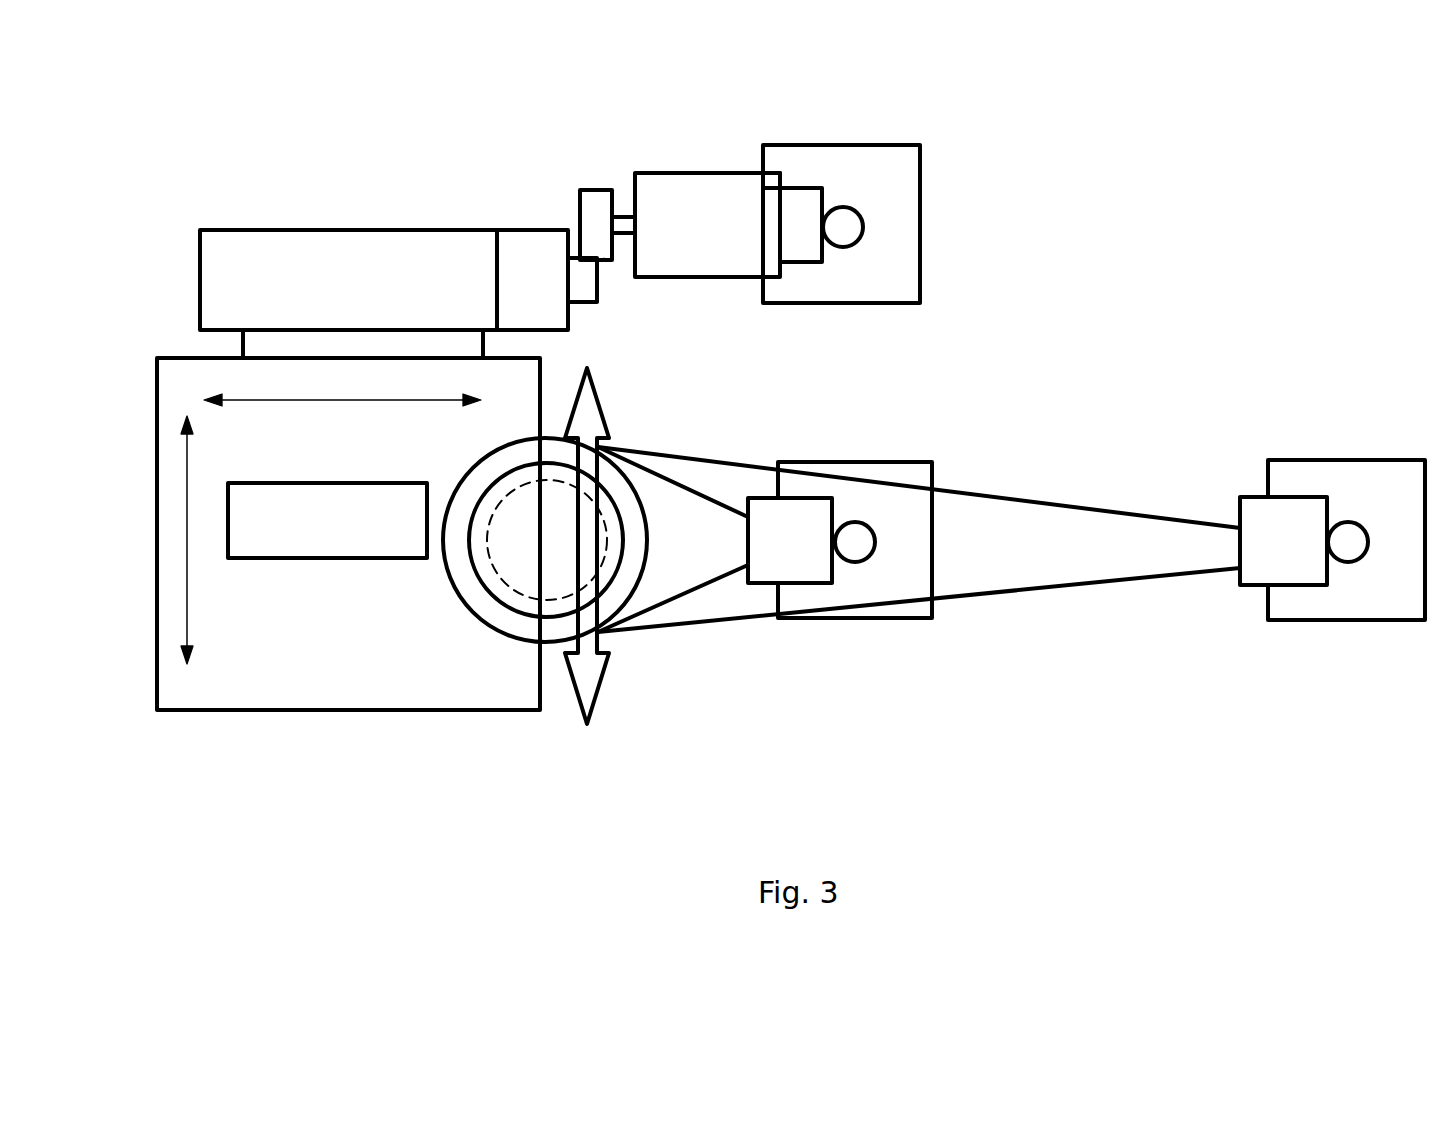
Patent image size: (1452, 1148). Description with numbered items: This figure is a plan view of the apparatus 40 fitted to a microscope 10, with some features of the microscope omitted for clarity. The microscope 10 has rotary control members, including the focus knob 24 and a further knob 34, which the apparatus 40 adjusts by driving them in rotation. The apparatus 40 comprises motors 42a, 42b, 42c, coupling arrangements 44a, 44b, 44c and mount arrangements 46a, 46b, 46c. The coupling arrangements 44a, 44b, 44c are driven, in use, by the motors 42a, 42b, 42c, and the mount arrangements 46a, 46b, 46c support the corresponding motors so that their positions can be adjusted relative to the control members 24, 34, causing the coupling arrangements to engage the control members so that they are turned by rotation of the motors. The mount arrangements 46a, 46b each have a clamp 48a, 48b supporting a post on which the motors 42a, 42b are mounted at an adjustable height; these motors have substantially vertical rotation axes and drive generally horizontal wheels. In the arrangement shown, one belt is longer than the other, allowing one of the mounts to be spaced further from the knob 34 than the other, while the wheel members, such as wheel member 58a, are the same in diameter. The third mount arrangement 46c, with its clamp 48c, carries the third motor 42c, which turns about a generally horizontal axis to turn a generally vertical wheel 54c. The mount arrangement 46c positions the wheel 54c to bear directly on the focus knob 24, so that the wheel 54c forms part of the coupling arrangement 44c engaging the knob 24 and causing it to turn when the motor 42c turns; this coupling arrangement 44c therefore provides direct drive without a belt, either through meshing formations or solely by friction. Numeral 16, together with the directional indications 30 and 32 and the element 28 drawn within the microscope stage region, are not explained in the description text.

The microscope 10 is at (234, 199).
The workpiece table 16 is at (218, 697).
The focus knob 24 is at (598, 297).
The workpiece 28 is at (343, 539).
The X direction movement 30 is at (314, 401).
The Y direction movement 32 is at (190, 592).
The rotary control member 34 is at (547, 548).
The apparatus 40 is at (1123, 745).
The motor 42a is at (1258, 588).
The motor 42b is at (800, 585).
The third motor 42c is at (682, 173).
The coupling arrangement 44a is at (1053, 500).
The coupling arrangement 44b is at (690, 490).
The coupling arrangement 44c is at (531, 199).
The mount arrangement 46a is at (1350, 548).
The mount arrangement 46b is at (863, 535).
The third mount arrangement 46c is at (848, 230).
The clamp 48a is at (1366, 470).
The clamp 48b is at (903, 592).
The clamp 48c is at (904, 179).
The wheel 54c is at (593, 190).
The wheel member 58a is at (476, 594).